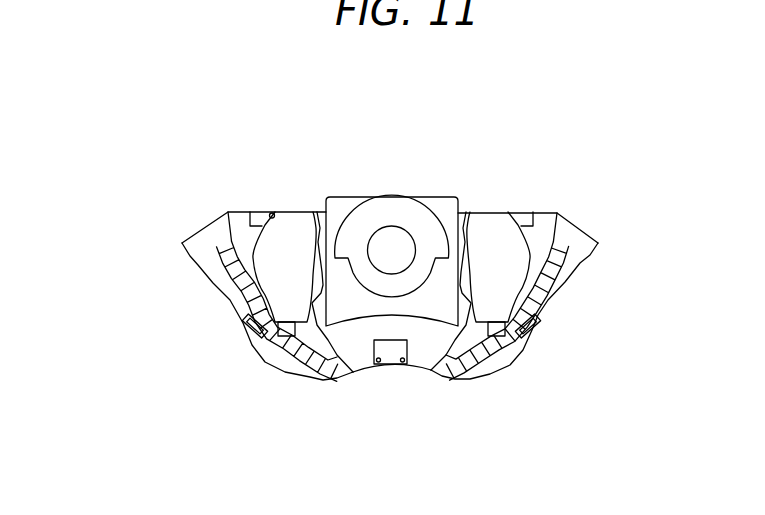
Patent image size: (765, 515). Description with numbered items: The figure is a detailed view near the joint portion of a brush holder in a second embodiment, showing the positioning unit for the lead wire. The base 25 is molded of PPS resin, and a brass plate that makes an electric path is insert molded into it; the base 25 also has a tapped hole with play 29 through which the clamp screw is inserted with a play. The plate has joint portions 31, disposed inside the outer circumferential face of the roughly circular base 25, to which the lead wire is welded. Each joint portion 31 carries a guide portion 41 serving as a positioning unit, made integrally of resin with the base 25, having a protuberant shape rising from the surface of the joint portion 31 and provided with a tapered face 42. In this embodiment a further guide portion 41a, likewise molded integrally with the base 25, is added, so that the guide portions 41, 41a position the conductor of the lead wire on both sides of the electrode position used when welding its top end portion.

The base 25 is at (203, 240).
The tapped hole with play 29 is at (393, 237).
The joint portion 31 is at (288, 277).
The guide portion 41 is at (352, 373).
The guide portion 41a is at (273, 213).
The tapered face 42 is at (247, 327).